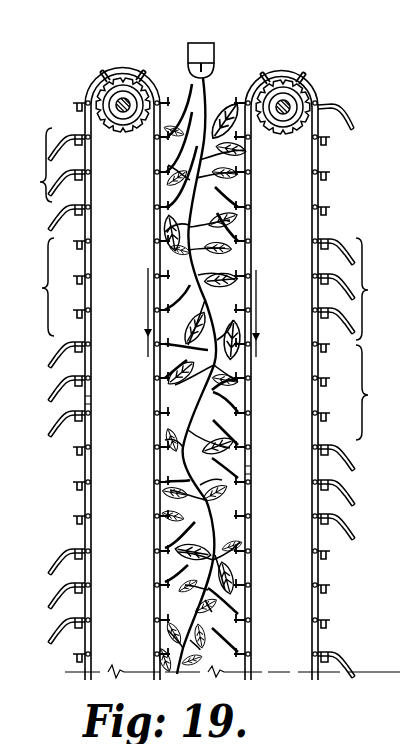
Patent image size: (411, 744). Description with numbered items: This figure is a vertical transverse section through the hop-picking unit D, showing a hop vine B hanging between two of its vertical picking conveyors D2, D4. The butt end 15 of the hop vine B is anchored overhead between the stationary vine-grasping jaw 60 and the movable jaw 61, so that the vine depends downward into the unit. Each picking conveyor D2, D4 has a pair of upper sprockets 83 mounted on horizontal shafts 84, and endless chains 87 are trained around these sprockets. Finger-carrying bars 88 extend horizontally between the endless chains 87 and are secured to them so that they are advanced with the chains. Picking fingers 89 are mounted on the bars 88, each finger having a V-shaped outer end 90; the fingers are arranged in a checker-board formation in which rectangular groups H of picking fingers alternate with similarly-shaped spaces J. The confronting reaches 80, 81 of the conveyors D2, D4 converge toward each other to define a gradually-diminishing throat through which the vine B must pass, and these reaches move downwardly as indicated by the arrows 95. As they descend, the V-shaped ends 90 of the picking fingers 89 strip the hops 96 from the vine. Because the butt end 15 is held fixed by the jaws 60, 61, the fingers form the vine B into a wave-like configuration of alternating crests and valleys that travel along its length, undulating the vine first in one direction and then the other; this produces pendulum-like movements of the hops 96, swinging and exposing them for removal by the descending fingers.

The stationary vine-grasping jaw 60 is at (186, 42).
The movable jaw 61 is at (201, 43).
The butt end 15 is at (207, 82).
The horizontal shafts 84 is at (120, 103).
The upper sprockets 83 is at (197, 120).
The confronting reach 81 is at (156, 236).
The confronting reach 80 is at (247, 240).
The arrows 95 is at (147, 318).
The hops 96 is at (157, 437).
The finger-carrying bars 88 is at (88, 400).
The endless chains 87 is at (85, 467).
The picking fingers 89 is at (52, 555).
The V-shaped outer end 90 is at (60, 410).
The hop-picking unit D is at (197, 92).
The picking conveyor D2 is at (313, 376).
The picking conveyor D4 is at (87, 374).
The rectangular groups of picking fingers H is at (40, 182).
The spaces J is at (42, 288).
The hop vine B is at (218, 660).